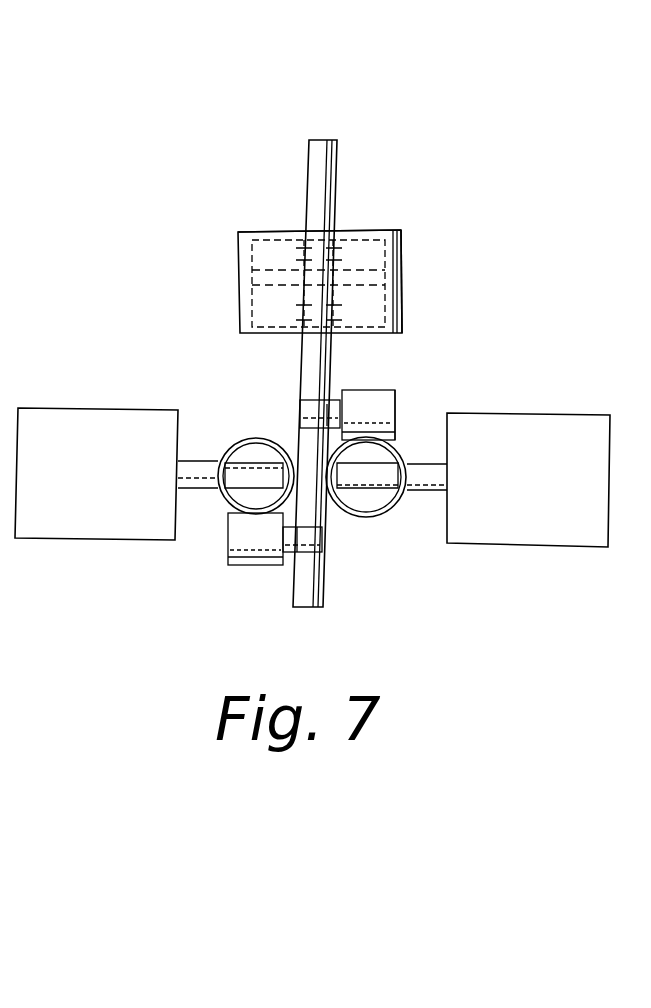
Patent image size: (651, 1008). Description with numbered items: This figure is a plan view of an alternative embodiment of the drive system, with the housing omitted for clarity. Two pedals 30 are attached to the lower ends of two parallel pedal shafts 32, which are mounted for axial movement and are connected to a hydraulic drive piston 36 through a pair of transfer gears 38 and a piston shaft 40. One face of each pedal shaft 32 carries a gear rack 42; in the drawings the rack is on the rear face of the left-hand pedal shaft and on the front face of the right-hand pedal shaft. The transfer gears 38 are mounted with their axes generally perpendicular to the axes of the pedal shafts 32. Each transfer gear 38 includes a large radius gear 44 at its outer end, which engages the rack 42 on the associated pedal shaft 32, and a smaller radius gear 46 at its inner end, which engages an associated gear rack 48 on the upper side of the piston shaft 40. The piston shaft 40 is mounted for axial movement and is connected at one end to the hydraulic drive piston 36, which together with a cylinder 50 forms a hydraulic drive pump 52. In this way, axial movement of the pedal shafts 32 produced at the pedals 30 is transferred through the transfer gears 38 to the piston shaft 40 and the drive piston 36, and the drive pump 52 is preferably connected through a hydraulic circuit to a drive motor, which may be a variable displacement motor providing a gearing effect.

The pedal 30 is at (75, 428).
The pedal shaft 32 is at (240, 437).
The hydraulic drive piston 36 is at (403, 273).
The transfer gear 38 is at (395, 402).
The piston shaft 40 is at (303, 353).
The gear rack 42 is at (372, 430).
The large radius gear 44 is at (367, 397).
The smaller radius gear 46 is at (313, 412).
The gear rack 48 is at (305, 437).
The cylinder 50 is at (263, 255).
The hydraulic drive pump 52 is at (404, 226).